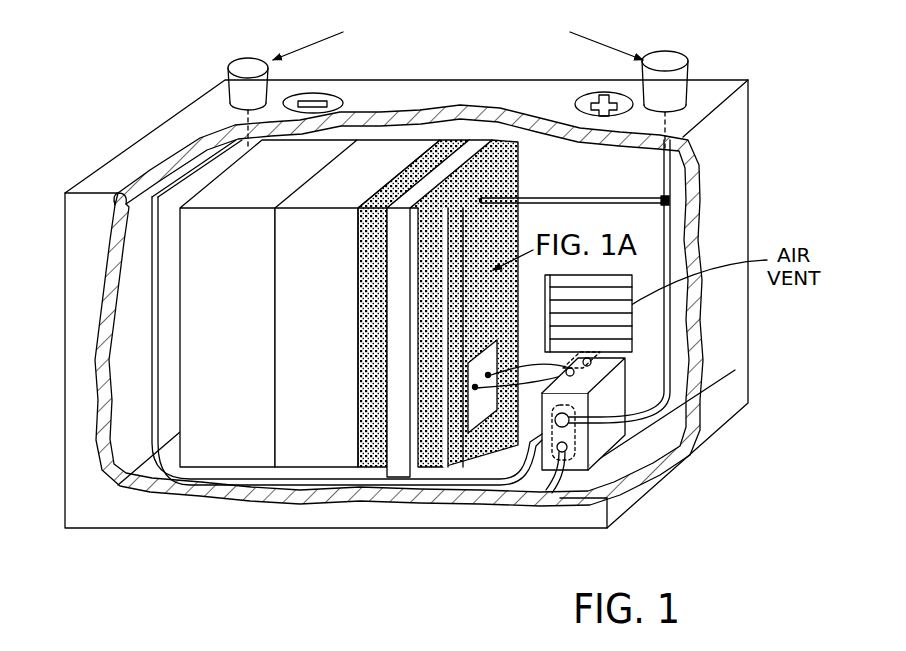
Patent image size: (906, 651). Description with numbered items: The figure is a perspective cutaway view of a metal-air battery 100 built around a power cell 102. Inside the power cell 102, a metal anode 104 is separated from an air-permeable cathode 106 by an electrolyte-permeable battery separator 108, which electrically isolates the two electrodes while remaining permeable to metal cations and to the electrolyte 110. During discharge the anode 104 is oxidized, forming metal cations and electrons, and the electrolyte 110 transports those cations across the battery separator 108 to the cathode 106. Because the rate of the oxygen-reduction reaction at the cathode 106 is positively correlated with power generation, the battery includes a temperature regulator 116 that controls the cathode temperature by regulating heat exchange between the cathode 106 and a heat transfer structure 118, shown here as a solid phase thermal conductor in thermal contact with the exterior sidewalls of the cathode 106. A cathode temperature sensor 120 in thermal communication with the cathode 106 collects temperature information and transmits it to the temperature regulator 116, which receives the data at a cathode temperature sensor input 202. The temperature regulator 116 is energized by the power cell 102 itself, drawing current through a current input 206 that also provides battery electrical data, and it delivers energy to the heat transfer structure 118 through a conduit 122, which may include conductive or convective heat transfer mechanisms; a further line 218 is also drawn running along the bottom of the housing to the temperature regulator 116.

The metal-air battery 100 is at (122, 78).
The power cell 102 is at (267, 477).
The metal anode 104 is at (240, 342).
The air-permeable cathode 106 is at (370, 462).
The electrolyte-permeable battery separator 108 is at (337, 342).
The electrolyte 110 is at (315, 447).
The temperature regulator 116 is at (610, 441).
The heat transfer structure 118 is at (400, 462).
The cathode temperature sensor 120 is at (637, 382).
The conduit 122 is at (462, 480).
The cathode temperature sensor input 202 is at (668, 405).
The current input 206 is at (567, 449).
The fluid tube 218 is at (533, 468).